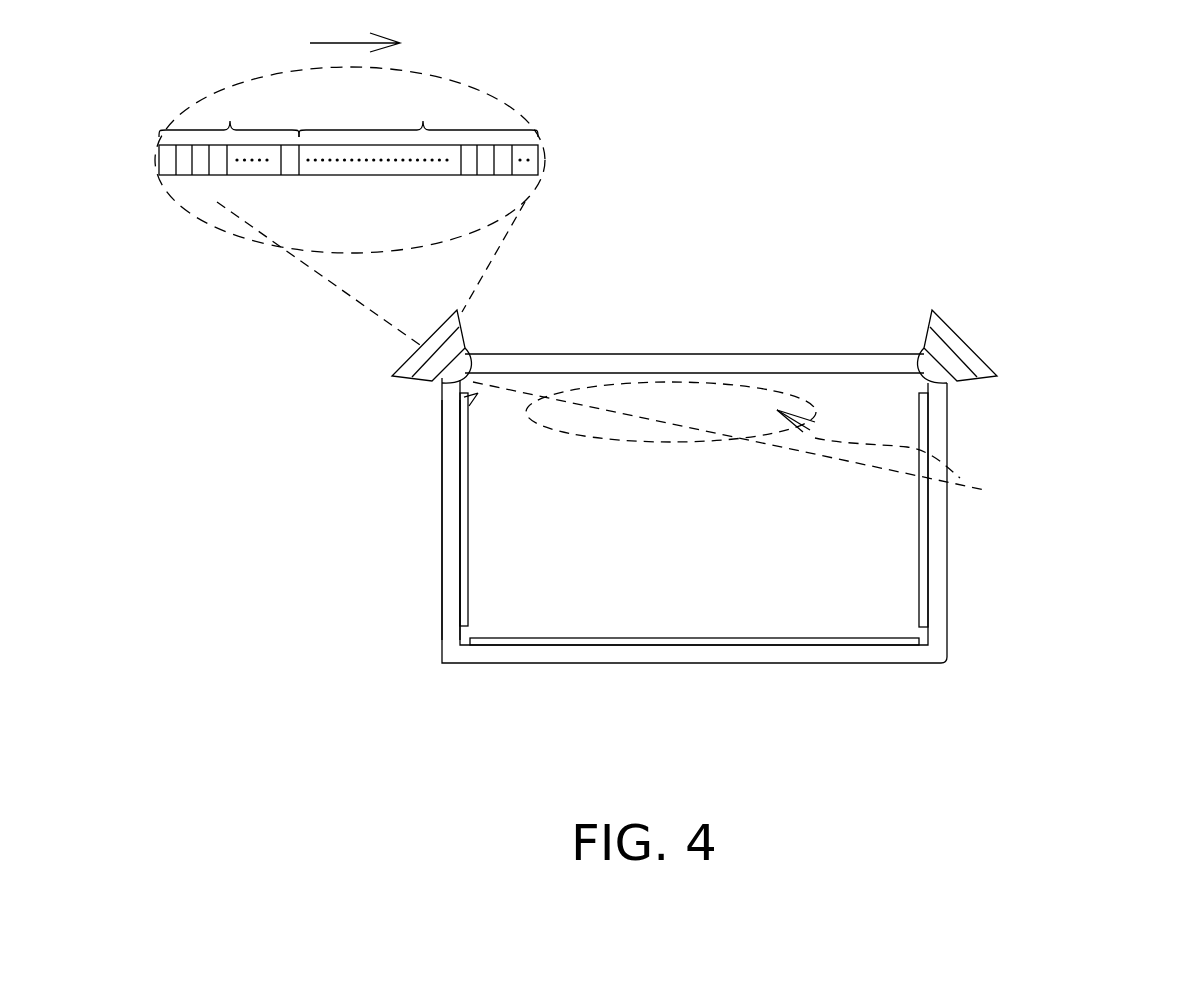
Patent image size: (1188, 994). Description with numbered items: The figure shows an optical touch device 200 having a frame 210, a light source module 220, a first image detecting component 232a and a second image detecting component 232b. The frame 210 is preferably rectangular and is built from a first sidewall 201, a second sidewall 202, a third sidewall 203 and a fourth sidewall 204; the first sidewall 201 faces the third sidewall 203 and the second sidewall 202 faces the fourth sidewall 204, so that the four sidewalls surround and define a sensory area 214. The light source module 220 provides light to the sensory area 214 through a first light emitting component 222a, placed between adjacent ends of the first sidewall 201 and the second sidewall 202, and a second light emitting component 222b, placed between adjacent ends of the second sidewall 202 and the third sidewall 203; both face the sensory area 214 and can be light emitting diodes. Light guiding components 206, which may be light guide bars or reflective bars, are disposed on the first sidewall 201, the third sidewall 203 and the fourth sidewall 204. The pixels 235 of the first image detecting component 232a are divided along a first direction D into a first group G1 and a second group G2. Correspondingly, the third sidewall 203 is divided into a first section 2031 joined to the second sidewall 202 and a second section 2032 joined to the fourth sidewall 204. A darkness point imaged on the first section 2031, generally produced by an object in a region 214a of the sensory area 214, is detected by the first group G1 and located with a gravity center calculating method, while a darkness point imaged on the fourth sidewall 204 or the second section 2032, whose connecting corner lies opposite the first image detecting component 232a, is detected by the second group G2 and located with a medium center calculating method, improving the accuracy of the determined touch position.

The optical touch device 200 is at (1022, 122).
The frame 210 is at (340, 435).
The first sidewall 201 is at (454, 513).
The second sidewall 202 is at (518, 367).
The third sidewall 203 is at (938, 577).
The first section 2031 is at (950, 382).
The second section 2032 is at (950, 489).
The fourth sidewall 204 is at (472, 653).
The light guiding component 206 is at (463, 612).
The sensory area 214 is at (478, 393).
The region 214a is at (762, 446).
The light source module 220 is at (694, 290).
The first light emitting component 222a is at (466, 353).
The second light emitting component 222b is at (645, 275).
The first image detecting component 232a is at (462, 315).
The second image detecting component 232b is at (930, 317).
The pixels 235 is at (183, 168).
The first group G1 is at (229, 114).
The second group G2 is at (418, 114).
The first direction D is at (342, 42).